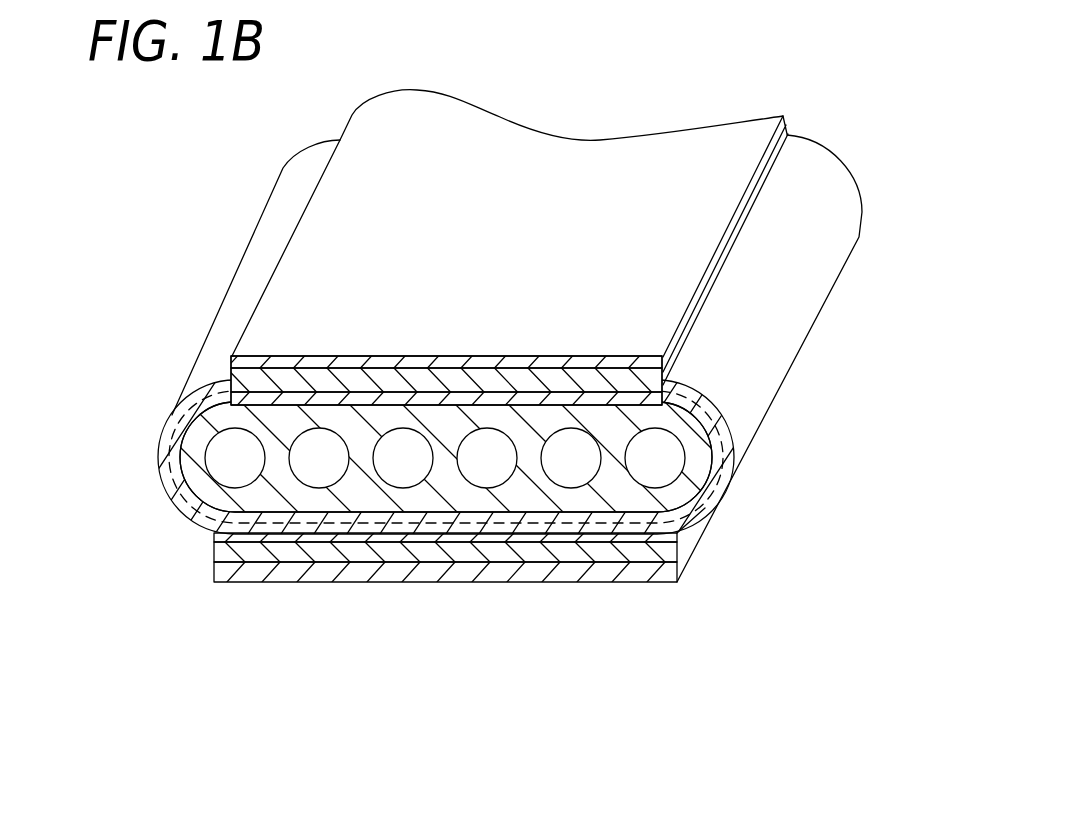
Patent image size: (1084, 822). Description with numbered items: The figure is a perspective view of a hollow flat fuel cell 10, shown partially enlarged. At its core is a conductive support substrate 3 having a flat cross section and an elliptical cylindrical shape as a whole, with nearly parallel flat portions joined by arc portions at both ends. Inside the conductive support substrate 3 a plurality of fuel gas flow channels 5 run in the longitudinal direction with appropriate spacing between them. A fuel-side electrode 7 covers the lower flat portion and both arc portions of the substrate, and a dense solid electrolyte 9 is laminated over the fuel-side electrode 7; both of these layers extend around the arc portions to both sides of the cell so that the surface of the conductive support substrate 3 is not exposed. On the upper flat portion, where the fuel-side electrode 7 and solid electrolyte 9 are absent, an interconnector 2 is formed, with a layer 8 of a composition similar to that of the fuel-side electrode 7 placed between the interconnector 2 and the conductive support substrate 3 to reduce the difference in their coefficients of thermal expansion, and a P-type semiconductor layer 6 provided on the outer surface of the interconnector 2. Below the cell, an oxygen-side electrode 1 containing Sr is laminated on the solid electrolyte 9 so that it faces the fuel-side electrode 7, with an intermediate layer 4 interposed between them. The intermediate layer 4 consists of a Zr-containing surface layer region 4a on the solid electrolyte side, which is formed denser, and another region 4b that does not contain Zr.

The fuel cell 10 is at (308, 116).
The oxygen-side electrode 1 is at (348, 575).
The interconnector 2 is at (289, 377).
The conductive support substrate 3 is at (680, 492).
The intermediate layer 4 is at (433, 609).
The surface layer region 4a is at (513, 537).
The other region 4b is at (572, 553).
The fuel gas flow channels 5 is at (318, 472).
The P-type semiconductor layer 6 is at (637, 365).
The fuel-side electrode 7 is at (633, 517).
The layer having a composition similar to the fuel-side electrode 8 is at (598, 395).
The solid electrolyte 9 is at (443, 528).